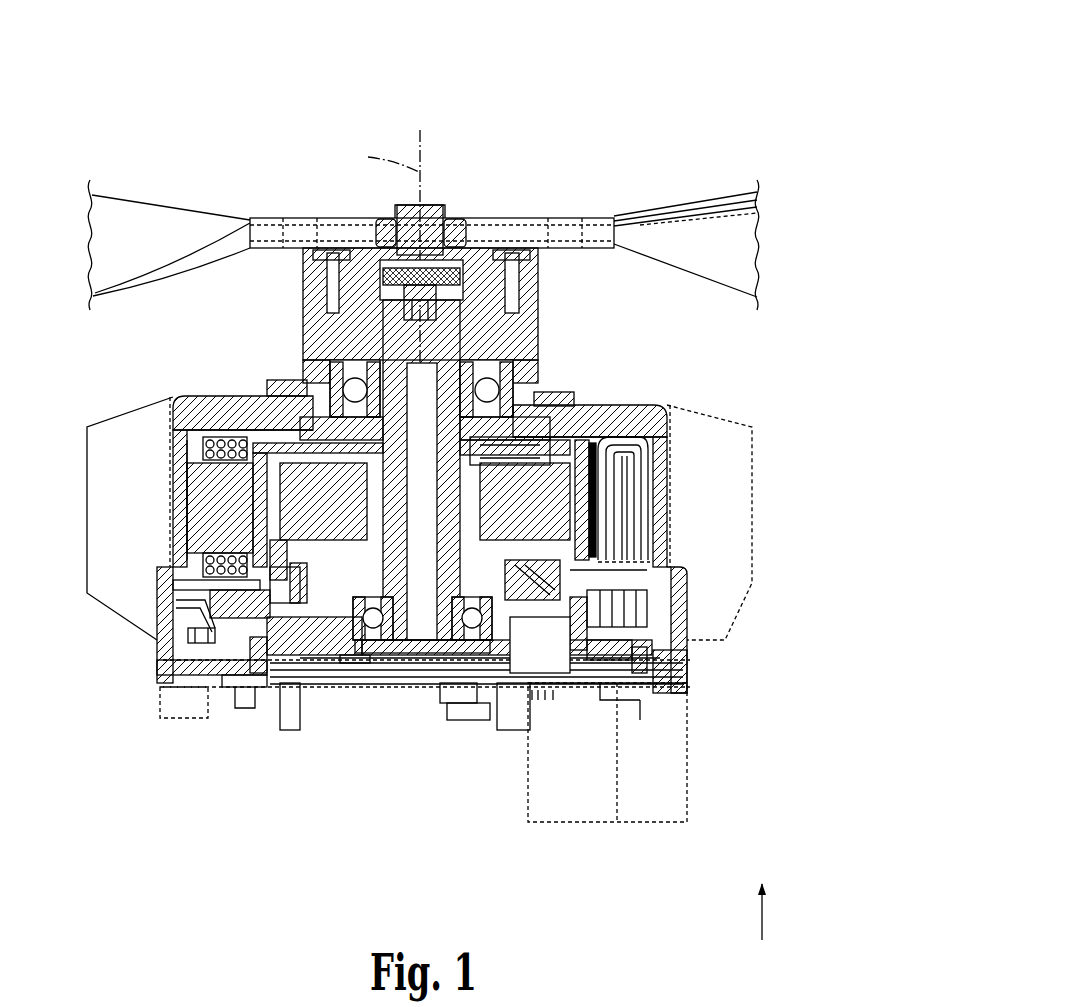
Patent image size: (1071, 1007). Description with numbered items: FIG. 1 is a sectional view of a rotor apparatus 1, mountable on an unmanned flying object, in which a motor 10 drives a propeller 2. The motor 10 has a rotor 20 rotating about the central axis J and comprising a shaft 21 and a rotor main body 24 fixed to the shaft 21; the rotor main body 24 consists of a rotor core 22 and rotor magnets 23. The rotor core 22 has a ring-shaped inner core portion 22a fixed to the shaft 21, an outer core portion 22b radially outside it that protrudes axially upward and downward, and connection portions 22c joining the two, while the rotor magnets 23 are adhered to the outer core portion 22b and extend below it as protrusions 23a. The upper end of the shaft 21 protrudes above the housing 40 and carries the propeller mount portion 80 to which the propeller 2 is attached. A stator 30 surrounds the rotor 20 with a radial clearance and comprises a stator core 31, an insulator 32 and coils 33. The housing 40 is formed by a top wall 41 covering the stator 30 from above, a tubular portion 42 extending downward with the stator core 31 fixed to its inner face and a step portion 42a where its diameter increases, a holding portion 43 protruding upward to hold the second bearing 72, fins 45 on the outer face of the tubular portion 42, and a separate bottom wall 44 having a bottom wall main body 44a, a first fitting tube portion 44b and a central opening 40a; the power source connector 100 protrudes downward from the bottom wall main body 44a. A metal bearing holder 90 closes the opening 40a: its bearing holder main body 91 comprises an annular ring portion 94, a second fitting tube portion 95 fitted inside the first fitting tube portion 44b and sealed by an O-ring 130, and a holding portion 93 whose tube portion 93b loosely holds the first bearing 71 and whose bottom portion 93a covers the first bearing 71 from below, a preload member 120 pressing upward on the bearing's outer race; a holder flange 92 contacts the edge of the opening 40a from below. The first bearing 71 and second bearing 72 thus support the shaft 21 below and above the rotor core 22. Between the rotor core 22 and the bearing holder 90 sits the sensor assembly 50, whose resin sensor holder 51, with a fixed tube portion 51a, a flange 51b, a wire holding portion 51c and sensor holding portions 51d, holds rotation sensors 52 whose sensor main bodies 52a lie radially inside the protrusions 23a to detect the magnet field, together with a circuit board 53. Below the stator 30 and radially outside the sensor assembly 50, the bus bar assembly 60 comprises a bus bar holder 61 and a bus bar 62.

The rotor apparatus 1 is at (680, 106).
The propeller 2 is at (598, 216).
The motor 10 is at (613, 362).
The rotor 20 is at (480, 426).
The shaft 21 is at (448, 580).
The rotor core 22 is at (338, 806).
The inner core portion 22a is at (345, 650).
The outer core portion 22b is at (295, 660).
The connection portions 22c is at (322, 642).
The rotor magnet 23 is at (664, 447).
The protrusions 23a is at (660, 527).
The rotor main body 24 is at (178, 662).
The stator 30 is at (658, 583).
The stator core 31 is at (198, 496).
The insulator 32 is at (174, 418).
The coils 33 is at (206, 420).
The housing 40 is at (233, 394).
The opening 40a is at (572, 700).
The top wall 41 is at (635, 425).
The tubular portion 42 is at (698, 432).
The step portion 42a is at (680, 592).
The holding portion 43 is at (533, 385).
The bottom wall 44 is at (190, 806).
The bottom wall main body 44a is at (200, 668).
The first fitting tube portion 44b is at (232, 665).
The fins 45 is at (130, 613).
The sensor assembly 50 is at (537, 690).
The sensor holder 51 is at (605, 450).
The fixed tube portion 51a is at (355, 590).
The flange 51b is at (490, 590).
The wire holding portion 51c is at (288, 470).
The sensor holding portion 51d is at (655, 474).
The rotation sensor 52 is at (660, 500).
The sensor main body 52a is at (665, 556).
The circuit board 53 is at (541, 690).
The bus bar assembly 60 is at (657, 612).
The bus bar holder 61 is at (665, 688).
The bus bar 62 is at (668, 685).
The first bearing 71 is at (408, 660).
The second bearing 72 is at (316, 377).
The propeller mount portion 80 is at (550, 290).
The bearing holder 90 is at (373, 680).
The bearing holder main body 91 is at (425, 690).
The holder flange 92 is at (600, 712).
The holding portion 93 is at (510, 806).
The bottom portion 93a is at (465, 683).
The tube portion 93b is at (472, 660).
The annular ring portion 94 is at (548, 690).
The second fitting tube portion 95 is at (556, 690).
The power source connector 100 is at (670, 768).
The preload member 120 is at (352, 676).
The O-ring 130 is at (622, 684).